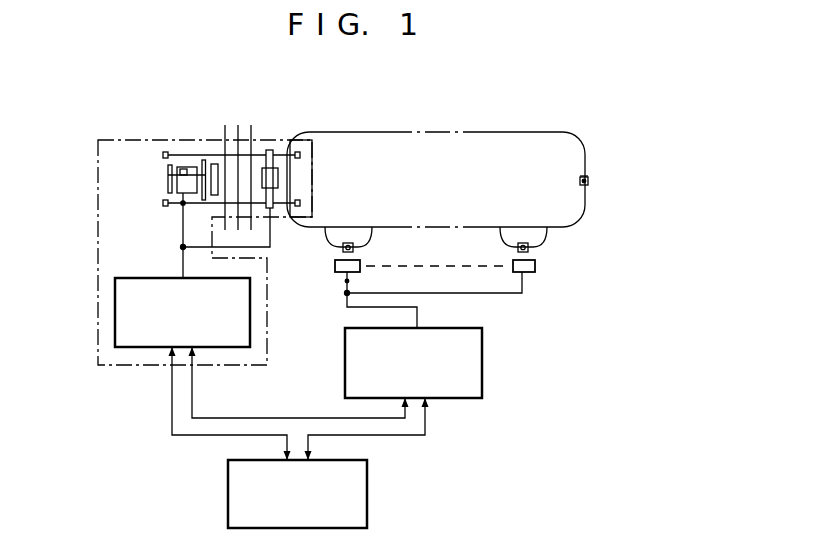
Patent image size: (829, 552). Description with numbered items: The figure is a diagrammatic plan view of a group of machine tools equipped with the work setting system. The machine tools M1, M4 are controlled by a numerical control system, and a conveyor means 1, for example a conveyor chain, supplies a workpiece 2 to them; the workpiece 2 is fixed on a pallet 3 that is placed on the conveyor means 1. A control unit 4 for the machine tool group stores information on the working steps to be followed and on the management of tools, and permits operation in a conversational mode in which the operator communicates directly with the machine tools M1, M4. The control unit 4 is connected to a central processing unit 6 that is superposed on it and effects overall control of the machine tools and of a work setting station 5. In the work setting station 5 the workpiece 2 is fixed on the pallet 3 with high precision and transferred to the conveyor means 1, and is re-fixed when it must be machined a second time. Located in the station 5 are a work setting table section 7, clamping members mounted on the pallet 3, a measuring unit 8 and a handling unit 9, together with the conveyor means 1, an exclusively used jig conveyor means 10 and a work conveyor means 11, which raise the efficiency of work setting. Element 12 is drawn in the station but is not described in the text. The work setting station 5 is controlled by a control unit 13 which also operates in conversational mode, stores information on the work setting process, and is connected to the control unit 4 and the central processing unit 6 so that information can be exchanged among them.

The conveyor means 1 is at (366, 132).
The workpiece 2 is at (588, 184).
The pallet 3 is at (588, 180).
The control unit 4 is at (482, 360).
The work setting station 5 is at (114, 140).
The central processing unit 6 is at (367, 503).
The work setting table section 7 is at (193, 156).
The measuring unit 8 is at (168, 176).
The handling unit 9 is at (272, 150).
The jig conveyor means 10 is at (251, 132).
The work conveyor means 11 is at (239, 132).
The probe 12 is at (225, 132).
The control unit 13 is at (115, 318).
The machine tool M1 is at (535, 272).
The machine tool M4 is at (336, 272).